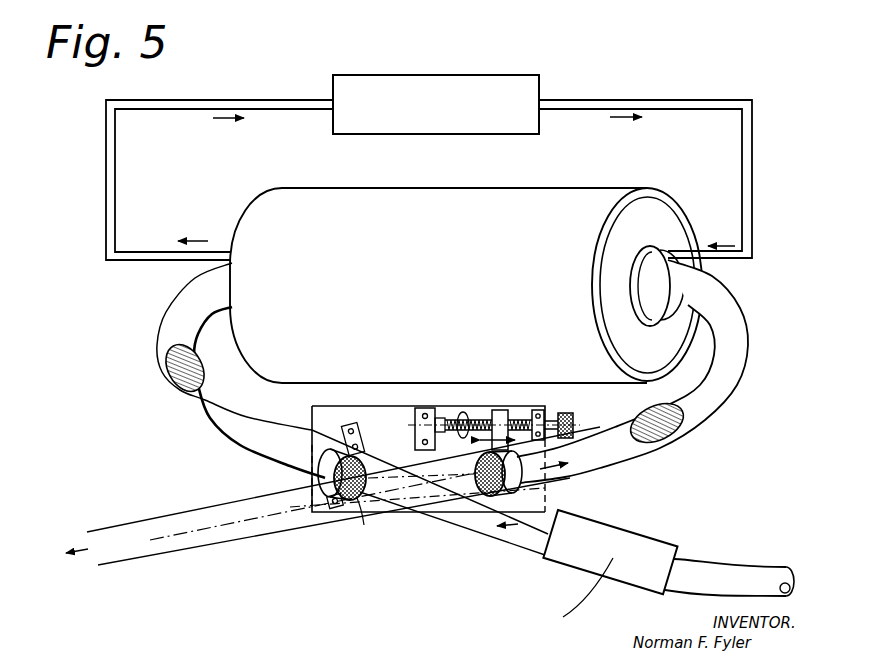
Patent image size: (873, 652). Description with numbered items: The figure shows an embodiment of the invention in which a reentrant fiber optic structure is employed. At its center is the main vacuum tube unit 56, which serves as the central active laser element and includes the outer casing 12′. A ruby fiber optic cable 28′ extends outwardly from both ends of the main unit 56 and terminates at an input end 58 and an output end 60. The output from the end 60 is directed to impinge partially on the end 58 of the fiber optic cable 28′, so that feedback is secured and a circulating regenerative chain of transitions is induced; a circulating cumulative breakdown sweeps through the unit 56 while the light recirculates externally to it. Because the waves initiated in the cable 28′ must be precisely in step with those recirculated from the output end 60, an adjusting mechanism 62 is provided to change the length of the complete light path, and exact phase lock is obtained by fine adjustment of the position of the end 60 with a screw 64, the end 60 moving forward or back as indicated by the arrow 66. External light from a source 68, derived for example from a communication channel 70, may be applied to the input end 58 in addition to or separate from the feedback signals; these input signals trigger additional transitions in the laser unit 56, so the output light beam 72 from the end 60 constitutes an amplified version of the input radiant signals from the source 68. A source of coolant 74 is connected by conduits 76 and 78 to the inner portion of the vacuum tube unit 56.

The outer casing 12′ is at (562, 188).
The ruby fiber optic cable 28′ is at (172, 378).
The main unit 56 is at (449, 298).
The input end 58 is at (318, 470).
The output end 60 is at (477, 495).
The adjusting mechanism 62 is at (520, 408).
The screw 64 is at (575, 426).
The arrow 66 is at (556, 470).
The source 68 is at (637, 532).
The communication channel 70 is at (742, 568).
The output light beam 72 is at (216, 511).
The source of coolant 74 is at (540, 78).
The conduit 76 is at (752, 198).
The conduit 78 is at (117, 212).